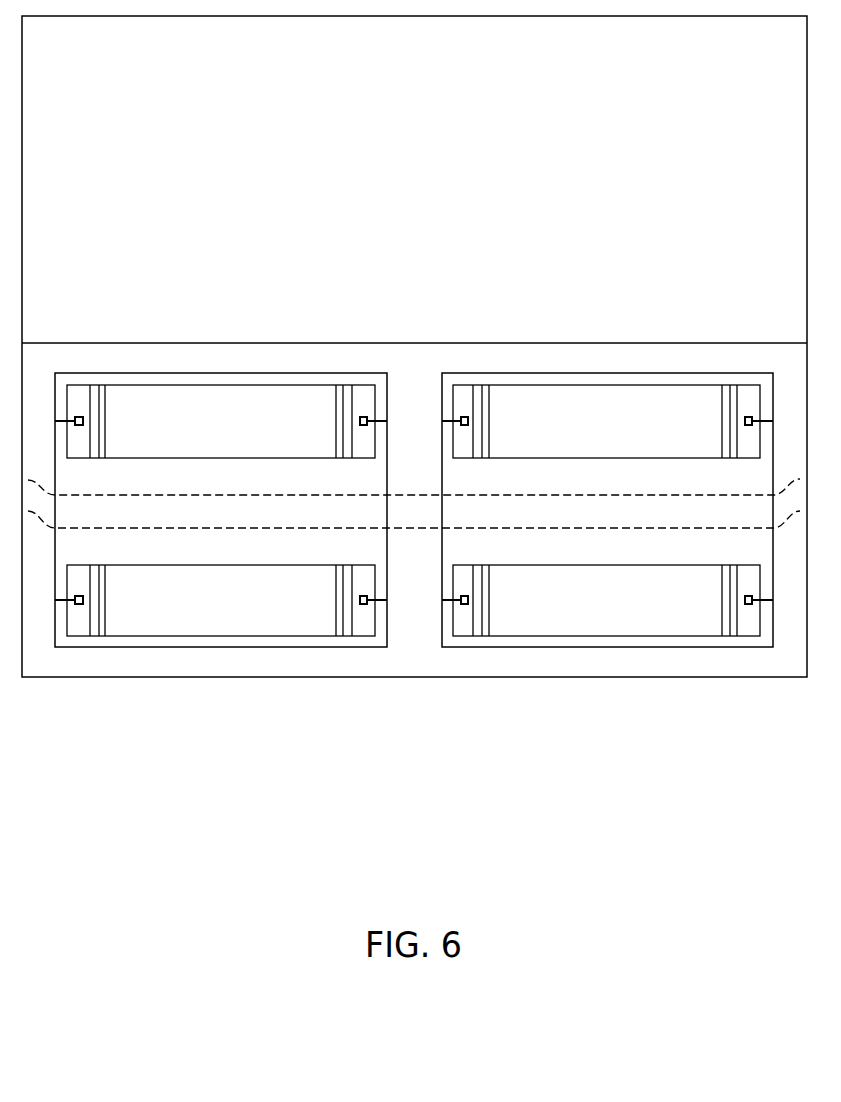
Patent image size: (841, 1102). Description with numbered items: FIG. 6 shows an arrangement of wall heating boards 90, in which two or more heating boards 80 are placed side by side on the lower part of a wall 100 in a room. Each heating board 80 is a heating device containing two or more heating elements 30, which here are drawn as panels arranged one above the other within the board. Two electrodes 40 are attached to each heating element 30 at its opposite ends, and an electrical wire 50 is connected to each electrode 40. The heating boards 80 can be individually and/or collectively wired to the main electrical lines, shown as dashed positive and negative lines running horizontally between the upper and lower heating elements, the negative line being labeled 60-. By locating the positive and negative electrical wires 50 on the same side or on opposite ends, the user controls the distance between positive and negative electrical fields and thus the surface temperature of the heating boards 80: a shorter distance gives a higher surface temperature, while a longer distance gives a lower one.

The wall 100 is at (414, 346).
The arrangement of wall heating boards 90 is at (396, 303).
The heating board 80 is at (207, 380).
The heating element 30 is at (215, 620).
The electrode 40 is at (355, 395).
The electrical wire 50 is at (61, 416).
The negative main electrical line 60- is at (414, 533).